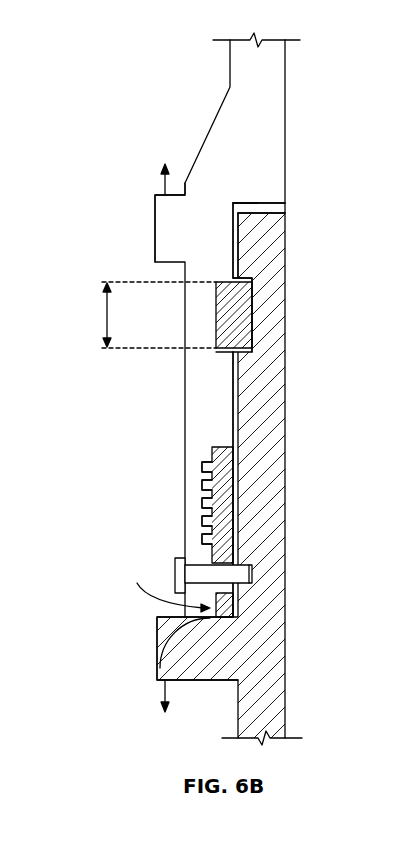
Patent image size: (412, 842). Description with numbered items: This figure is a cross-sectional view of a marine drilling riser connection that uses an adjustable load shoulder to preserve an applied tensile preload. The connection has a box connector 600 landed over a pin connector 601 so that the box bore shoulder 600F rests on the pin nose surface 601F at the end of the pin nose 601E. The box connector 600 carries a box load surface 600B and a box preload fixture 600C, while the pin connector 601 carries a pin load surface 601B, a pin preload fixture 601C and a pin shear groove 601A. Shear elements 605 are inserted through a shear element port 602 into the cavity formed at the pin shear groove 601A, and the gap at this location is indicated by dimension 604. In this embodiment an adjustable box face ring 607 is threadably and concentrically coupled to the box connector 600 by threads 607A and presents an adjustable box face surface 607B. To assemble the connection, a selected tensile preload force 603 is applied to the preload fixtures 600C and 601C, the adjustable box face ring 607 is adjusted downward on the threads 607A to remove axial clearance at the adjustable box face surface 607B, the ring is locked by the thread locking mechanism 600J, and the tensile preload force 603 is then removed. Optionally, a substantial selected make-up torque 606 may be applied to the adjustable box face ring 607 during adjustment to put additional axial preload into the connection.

The box connector 600 is at (272, 123).
The box load surface 600B is at (226, 350).
The box preload fixture 600C is at (155, 220).
The box bore shoulder 600F is at (253, 205).
The thread locking mechanism 600J is at (173, 580).
The pin connector 601 is at (268, 662).
The pin shear groove 601A is at (225, 276).
The pin load surface 601B is at (243, 277).
The pin preload fixture 601C is at (167, 652).
The pin nose 601E is at (273, 250).
The pin nose surface 601F is at (270, 222).
The shear element port 602 is at (193, 320).
The selected tensile preload force 603 is at (165, 183).
The gap dimension 604 is at (107, 320).
The shear elements 605 is at (245, 312).
The selected make-up torque 606 is at (148, 604).
The adjustable box face ring 607 is at (225, 508).
The threads 607A is at (200, 497).
The adjustable box face surface 607B is at (227, 605).